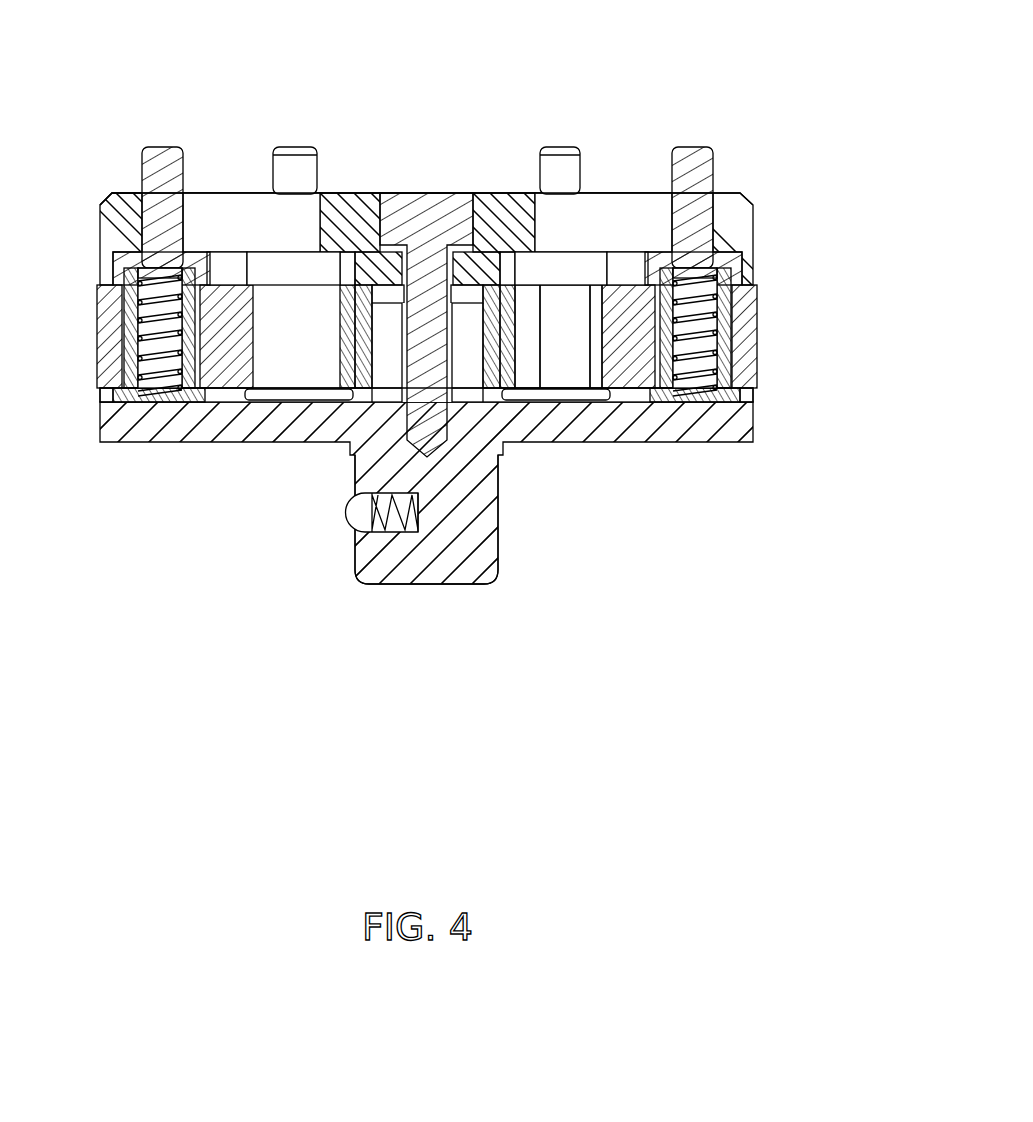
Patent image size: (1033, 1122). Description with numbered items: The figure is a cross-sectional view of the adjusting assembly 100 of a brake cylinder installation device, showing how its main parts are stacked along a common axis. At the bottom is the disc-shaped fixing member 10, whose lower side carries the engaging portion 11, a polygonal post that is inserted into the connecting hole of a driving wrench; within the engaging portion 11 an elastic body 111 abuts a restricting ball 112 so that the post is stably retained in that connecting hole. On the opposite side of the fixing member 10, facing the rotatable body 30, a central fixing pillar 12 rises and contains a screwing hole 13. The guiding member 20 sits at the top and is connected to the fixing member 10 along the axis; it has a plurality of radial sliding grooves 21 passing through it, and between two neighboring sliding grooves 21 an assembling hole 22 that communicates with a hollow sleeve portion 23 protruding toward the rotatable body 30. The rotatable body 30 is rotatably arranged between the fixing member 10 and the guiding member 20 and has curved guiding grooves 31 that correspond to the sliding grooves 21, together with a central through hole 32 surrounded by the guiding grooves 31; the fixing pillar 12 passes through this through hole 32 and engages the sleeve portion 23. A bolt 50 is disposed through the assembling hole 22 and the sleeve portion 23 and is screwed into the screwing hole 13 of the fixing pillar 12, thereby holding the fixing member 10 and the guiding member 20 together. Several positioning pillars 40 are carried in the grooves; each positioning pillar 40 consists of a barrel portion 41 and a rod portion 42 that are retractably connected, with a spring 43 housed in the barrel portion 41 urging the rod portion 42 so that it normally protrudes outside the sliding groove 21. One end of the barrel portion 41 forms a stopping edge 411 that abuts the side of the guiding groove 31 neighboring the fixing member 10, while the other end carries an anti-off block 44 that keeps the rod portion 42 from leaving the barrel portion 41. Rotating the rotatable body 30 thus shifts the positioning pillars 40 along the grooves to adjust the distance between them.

The adjusting assembly 100 is at (683, 26).
The fixing member 10 is at (740, 428).
The engaging portion 11 is at (478, 508).
The elastic body 111 is at (392, 535).
The restricting ball 112 is at (355, 512).
The fixing pillar 12 is at (472, 348).
The screwing hole 13 is at (443, 397).
The guiding member 20 is at (757, 222).
The sliding groove 21 is at (630, 205).
The assembling hole 22 is at (393, 262).
The sleeve portion 23 is at (362, 320).
The rotatable body 30 is at (757, 318).
The guiding groove 31 is at (125, 362).
The through hole 32 is at (340, 350).
The positioning pillar 40 is at (133, 138).
The barrel portion 41 is at (125, 322).
The stopping edge 411 is at (135, 400).
The rod portion 42 is at (161, 150).
The spring 43 is at (172, 372).
The anti-off block 44 is at (120, 270).
The bolt 50 is at (431, 212).